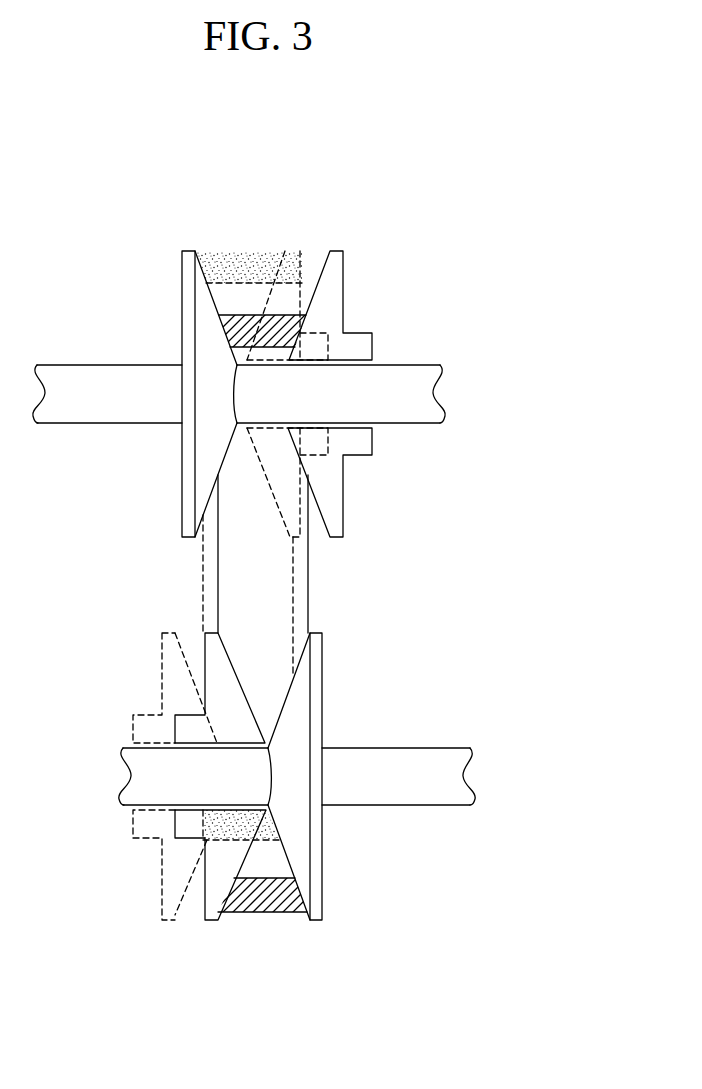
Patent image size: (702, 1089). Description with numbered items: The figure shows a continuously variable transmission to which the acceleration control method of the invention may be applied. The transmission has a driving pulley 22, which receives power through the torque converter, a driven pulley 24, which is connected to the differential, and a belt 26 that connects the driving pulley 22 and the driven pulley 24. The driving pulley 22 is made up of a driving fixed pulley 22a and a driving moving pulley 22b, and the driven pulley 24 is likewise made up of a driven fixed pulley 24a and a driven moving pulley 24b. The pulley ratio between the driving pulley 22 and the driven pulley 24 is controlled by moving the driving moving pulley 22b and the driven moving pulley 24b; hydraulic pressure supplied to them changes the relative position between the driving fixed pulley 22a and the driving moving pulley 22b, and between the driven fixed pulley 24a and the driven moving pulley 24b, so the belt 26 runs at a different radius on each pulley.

The driving pulley 22 is at (522, 756).
The driving fixed pulley 22a is at (322, 692).
The driving moving pulley 22b is at (205, 676).
The driven pulley 24 is at (522, 370).
The driven fixed pulley 24a is at (182, 485).
The driven moving pulley 24b is at (343, 490).
The belt 26 is at (308, 587).